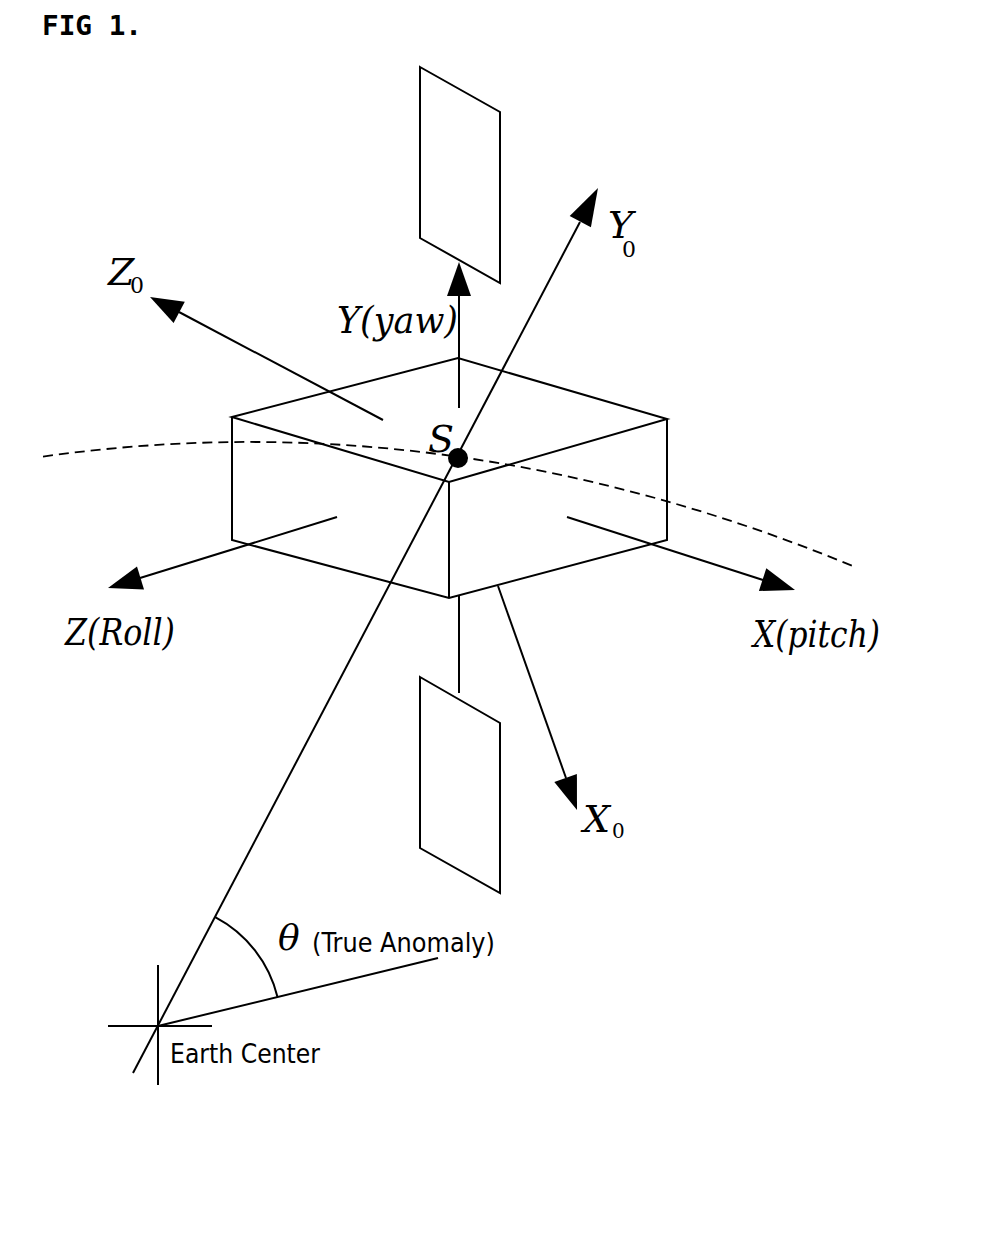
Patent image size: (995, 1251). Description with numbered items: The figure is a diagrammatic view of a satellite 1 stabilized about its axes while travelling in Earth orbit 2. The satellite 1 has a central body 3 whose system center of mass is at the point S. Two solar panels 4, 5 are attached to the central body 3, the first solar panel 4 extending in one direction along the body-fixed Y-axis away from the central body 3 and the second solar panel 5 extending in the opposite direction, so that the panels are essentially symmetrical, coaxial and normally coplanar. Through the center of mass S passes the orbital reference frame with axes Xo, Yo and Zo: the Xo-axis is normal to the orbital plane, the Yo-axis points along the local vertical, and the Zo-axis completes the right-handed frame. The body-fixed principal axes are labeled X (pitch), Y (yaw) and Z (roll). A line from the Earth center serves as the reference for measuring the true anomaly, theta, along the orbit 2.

The satellite 1 is at (493, 495).
The Earth orbit 2 is at (752, 525).
The central body 3 is at (600, 393).
The solar panel 4 is at (503, 128).
The solar panel 5 is at (503, 883).